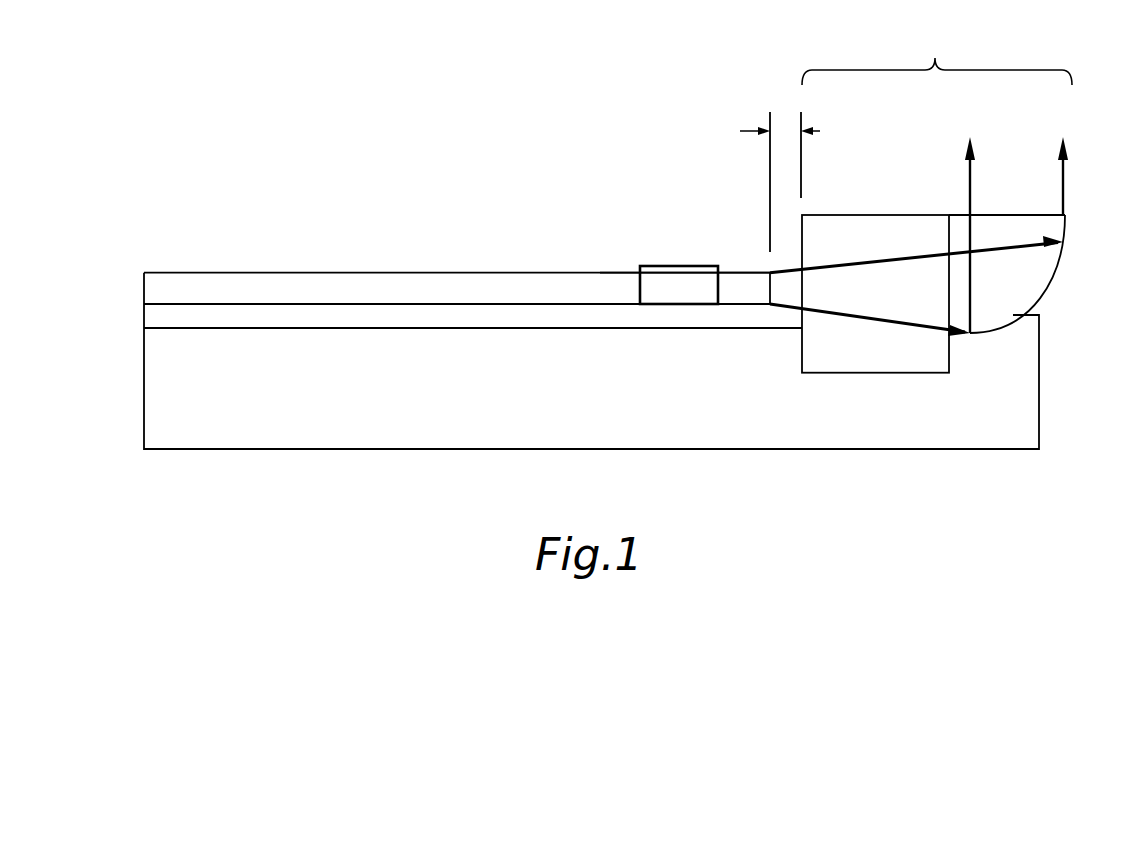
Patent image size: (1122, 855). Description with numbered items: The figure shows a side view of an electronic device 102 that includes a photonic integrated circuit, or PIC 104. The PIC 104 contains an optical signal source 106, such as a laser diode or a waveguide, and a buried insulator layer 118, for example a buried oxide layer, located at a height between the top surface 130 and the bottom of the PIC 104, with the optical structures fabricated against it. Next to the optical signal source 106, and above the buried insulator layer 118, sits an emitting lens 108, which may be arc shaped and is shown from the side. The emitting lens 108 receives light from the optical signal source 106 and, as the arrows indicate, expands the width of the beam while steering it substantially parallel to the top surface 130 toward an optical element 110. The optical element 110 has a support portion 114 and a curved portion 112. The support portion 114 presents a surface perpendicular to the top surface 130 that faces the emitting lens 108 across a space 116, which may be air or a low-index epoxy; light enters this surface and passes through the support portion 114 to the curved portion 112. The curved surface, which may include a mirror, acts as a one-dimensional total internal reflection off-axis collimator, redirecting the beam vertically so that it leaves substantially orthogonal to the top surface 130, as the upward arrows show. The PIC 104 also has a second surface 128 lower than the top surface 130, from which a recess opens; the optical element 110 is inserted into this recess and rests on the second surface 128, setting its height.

The electronic device 102 is at (128, 110).
The PIC 104 is at (144, 385).
The optical signal source 106 is at (678, 295).
The emitting lens 108 is at (735, 282).
The optical element 110 is at (937, 52).
The curved portion 112 is at (1027, 280).
The support portion 114 is at (877, 360).
The space 116 is at (820, 131).
The buried insulator layer 118 is at (158, 319).
The second surface 128 is at (787, 302).
The top surface 130 is at (430, 273).